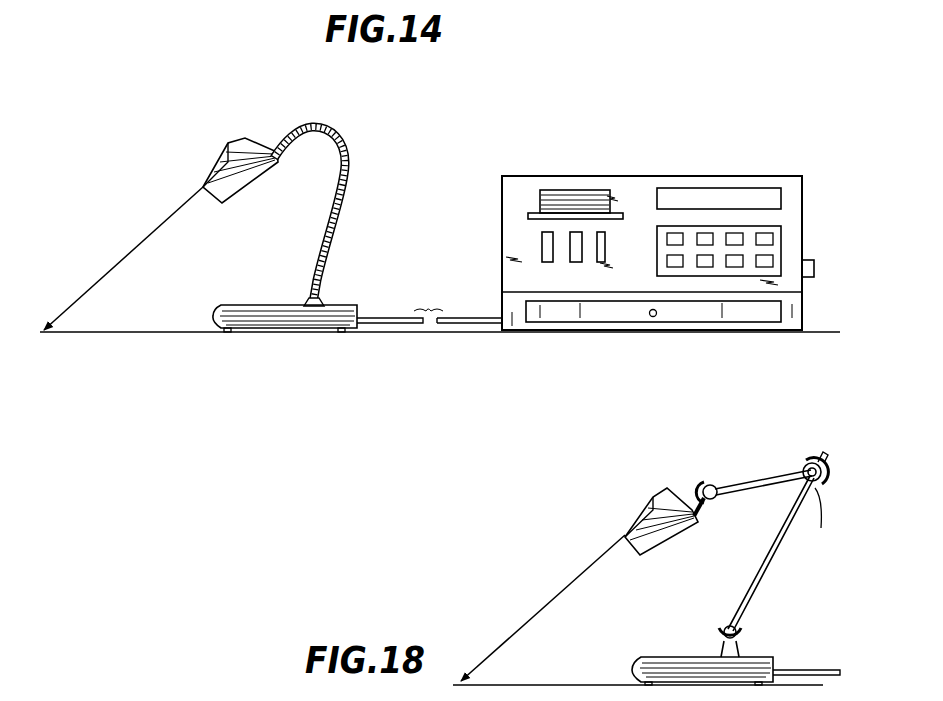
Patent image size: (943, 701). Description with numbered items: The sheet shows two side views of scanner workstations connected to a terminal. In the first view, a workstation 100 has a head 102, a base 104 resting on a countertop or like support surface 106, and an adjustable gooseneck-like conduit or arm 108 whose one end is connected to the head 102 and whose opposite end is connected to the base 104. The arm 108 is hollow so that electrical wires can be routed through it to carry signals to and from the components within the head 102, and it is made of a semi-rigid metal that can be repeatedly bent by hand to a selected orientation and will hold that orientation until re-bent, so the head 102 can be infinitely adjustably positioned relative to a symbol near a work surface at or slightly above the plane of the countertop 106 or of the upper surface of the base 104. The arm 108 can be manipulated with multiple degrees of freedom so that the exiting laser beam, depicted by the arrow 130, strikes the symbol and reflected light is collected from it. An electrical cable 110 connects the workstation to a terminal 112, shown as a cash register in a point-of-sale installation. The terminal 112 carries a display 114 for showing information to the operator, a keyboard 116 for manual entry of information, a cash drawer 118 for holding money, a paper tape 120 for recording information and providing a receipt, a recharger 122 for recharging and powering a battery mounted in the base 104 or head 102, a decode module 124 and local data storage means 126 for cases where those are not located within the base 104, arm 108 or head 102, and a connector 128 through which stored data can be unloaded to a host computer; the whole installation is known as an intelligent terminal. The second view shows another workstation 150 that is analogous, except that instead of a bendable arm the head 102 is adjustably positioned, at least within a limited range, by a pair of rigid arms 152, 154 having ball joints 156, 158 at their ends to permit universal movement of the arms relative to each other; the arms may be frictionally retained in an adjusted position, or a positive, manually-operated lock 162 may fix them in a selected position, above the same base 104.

In FIG. 14, the workstation 100 is at (356, 138).
In FIG. 14, the head 102 is at (240, 142).
In FIG. 18, the head 102 is at (658, 494).
In FIG. 14, the base 104 is at (348, 304).
In FIG. 18, the base 104 is at (770, 658).
In FIG. 14, the support surface 106 is at (181, 332).
In FIG. 14, the gooseneck-like arm 108 is at (343, 188).
In FIG. 14, the electrical cable 110 is at (477, 315).
In FIG. 14, the terminal 112 is at (668, 152).
In FIG. 14, the display 114 is at (708, 195).
In FIG. 14, the keyboard 116 is at (768, 237).
In FIG. 14, the cash drawer 118 is at (773, 313).
In FIG. 14, the paper tape 120 is at (580, 192).
In FIG. 14, the recharger 122 is at (543, 237).
In FIG. 14, the decode module 124 is at (573, 263).
In FIG. 14, the local data storage means 126 is at (605, 250).
In FIG. 14, the connector 128 is at (812, 259).
In FIG. 14, the arrow 130 is at (150, 227).
In FIG. 18, the workstation 150 is at (636, 588).
In FIG. 18, the rigid arm 152 is at (757, 595).
In FIG. 18, the rigid arm 154 is at (745, 478).
In FIG. 18, the ball joint 156 is at (724, 626).
In FIG. 18, the ball joint 158 is at (821, 528).
In FIG. 18, the manually-operated lock 162 is at (824, 452).